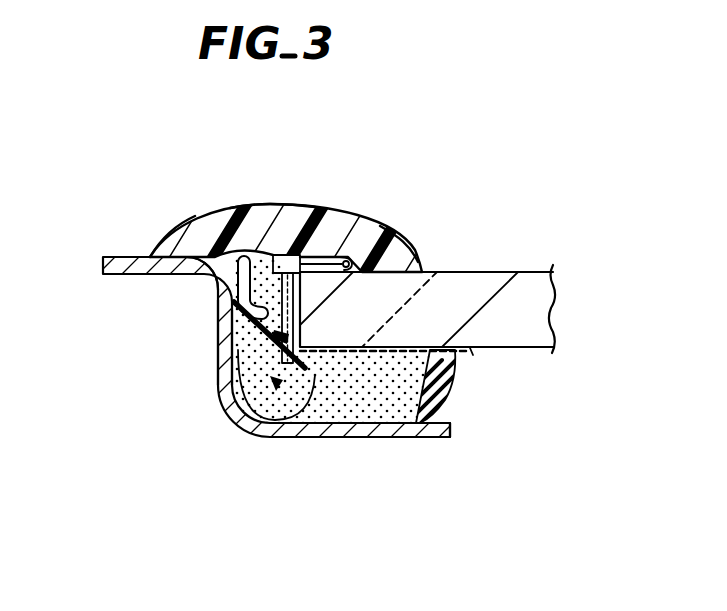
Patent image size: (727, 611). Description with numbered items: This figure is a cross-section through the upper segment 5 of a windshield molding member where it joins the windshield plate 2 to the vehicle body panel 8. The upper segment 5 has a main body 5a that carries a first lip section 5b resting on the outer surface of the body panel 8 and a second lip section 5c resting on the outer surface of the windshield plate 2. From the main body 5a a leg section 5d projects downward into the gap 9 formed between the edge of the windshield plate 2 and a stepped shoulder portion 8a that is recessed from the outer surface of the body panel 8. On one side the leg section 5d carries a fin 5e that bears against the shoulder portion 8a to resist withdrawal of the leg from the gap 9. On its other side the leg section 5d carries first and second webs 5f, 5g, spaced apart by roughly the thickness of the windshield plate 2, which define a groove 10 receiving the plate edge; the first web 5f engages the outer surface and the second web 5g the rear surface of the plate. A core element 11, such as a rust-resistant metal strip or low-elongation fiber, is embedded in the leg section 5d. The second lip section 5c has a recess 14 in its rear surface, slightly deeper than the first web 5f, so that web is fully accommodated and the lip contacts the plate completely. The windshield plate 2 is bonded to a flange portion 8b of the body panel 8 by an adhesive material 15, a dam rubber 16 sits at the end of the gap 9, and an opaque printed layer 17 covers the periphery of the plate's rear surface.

The windshield plate 2 is at (511, 271).
The upper segment 5 is at (328, 205).
The main body 5a is at (277, 208).
The first lip section 5b is at (208, 207).
The second lip section 5c is at (395, 238).
The leg section 5d is at (250, 434).
The fin 5e is at (250, 300).
The first web 5f is at (333, 255).
The second web 5g is at (287, 425).
The vehicle body panel 8 is at (135, 256).
The stepped shoulder portion 8a is at (220, 372).
The flange portion 8b is at (417, 440).
The gap 9 is at (205, 272).
The groove 10 is at (260, 330).
The core element 11 is at (270, 382).
The recess 14 is at (352, 258).
The adhesive material 15 is at (367, 408).
The dam rubber 16 is at (450, 388).
The opaque printed layer 17 is at (480, 351).